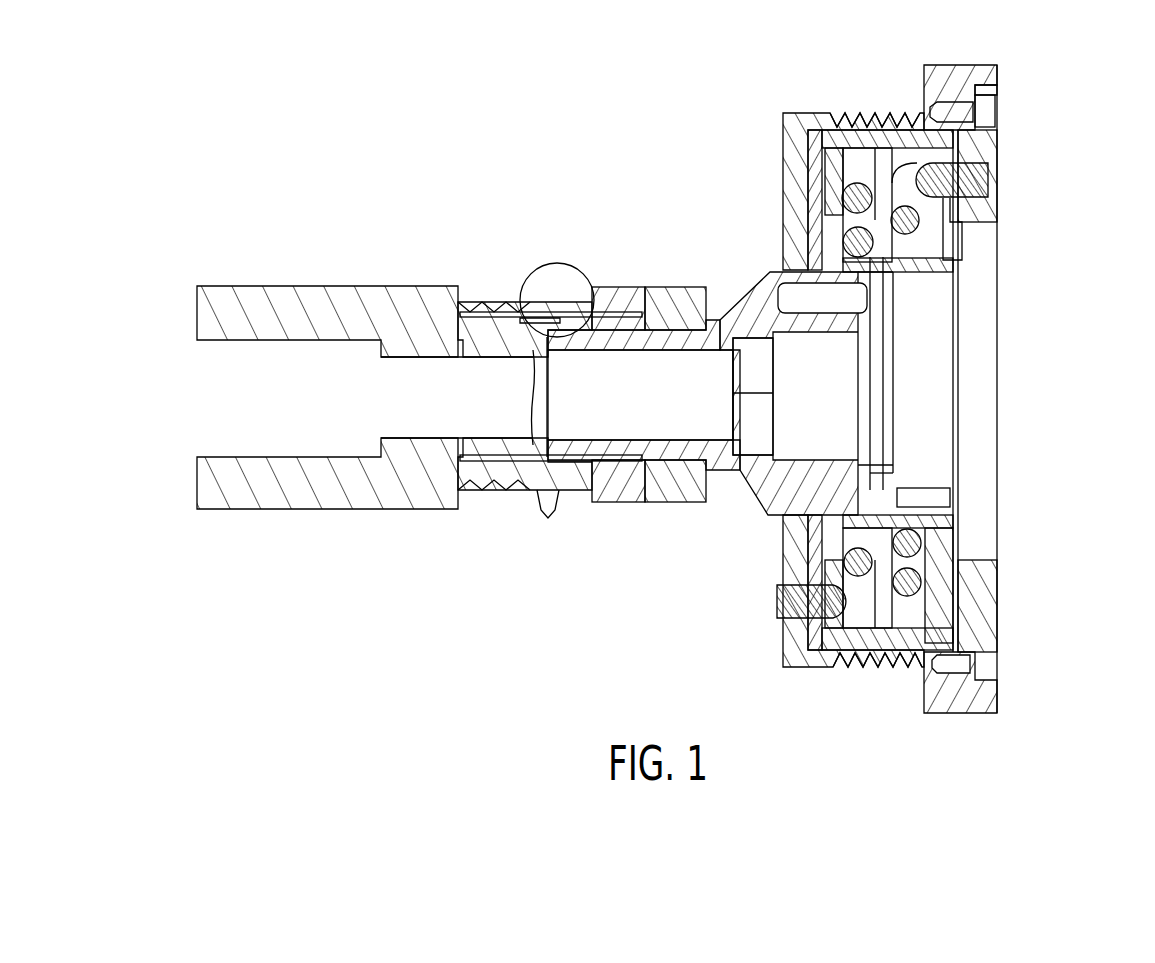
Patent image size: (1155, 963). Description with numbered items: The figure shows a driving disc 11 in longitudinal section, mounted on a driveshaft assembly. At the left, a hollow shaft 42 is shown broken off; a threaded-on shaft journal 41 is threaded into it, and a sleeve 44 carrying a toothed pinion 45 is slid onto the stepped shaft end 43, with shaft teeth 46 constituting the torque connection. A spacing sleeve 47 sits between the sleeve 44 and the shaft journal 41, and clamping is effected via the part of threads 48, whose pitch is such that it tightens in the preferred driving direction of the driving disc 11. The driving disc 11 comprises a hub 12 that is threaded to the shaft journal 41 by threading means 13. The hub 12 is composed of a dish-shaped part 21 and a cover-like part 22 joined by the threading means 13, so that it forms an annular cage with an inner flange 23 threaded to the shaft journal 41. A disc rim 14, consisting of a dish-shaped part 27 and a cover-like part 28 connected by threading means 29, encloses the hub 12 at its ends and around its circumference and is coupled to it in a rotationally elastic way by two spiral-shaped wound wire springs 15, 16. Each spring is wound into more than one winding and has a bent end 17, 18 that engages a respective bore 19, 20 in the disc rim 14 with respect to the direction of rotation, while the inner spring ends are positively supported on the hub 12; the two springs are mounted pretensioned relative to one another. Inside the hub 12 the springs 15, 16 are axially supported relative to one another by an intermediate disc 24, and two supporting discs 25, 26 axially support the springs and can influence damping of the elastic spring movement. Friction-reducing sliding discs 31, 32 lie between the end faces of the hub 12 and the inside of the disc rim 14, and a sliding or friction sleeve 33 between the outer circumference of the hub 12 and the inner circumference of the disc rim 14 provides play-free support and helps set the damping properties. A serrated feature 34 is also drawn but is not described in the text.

The driving disc 11 is at (1113, 130).
The hub 12 is at (965, 255).
The threading means 13 is at (790, 280).
The disc rim 14 is at (998, 68).
The wire spring 15 is at (815, 645).
The wire spring 16 is at (905, 600).
The bent end 17 is at (800, 625).
The bent end 18 is at (978, 160).
The bore 19 is at (780, 605).
The bore 20 is at (990, 185).
The dish-shaped part 21 is at (812, 205).
The cover-like part 22 is at (950, 238).
The inner flange 23 is at (895, 465).
The intermediate disc 24 is at (885, 135).
The supporting disc 25 is at (830, 132).
The supporting disc 26 is at (930, 150).
The dish-shaped part 27 is at (795, 115).
The cover-like part 28 is at (990, 95).
The threading means 29 is at (985, 115).
The sliding disc 31 is at (805, 572).
The sliding disc 32 is at (965, 572).
The sliding or friction sleeve 33 is at (855, 662).
The upper serrations 34 is at (858, 118).
The shaft journal 41 is at (722, 268).
The hollow shaft 42 is at (313, 292).
The stepped shaft end 43 is at (495, 305).
The sleeve 44 is at (627, 290).
The toothed pinion 45 is at (552, 290).
The shaft teeth 46 is at (600, 312).
The spacing sleeve 47 is at (682, 290).
The threads 48 is at (532, 302).